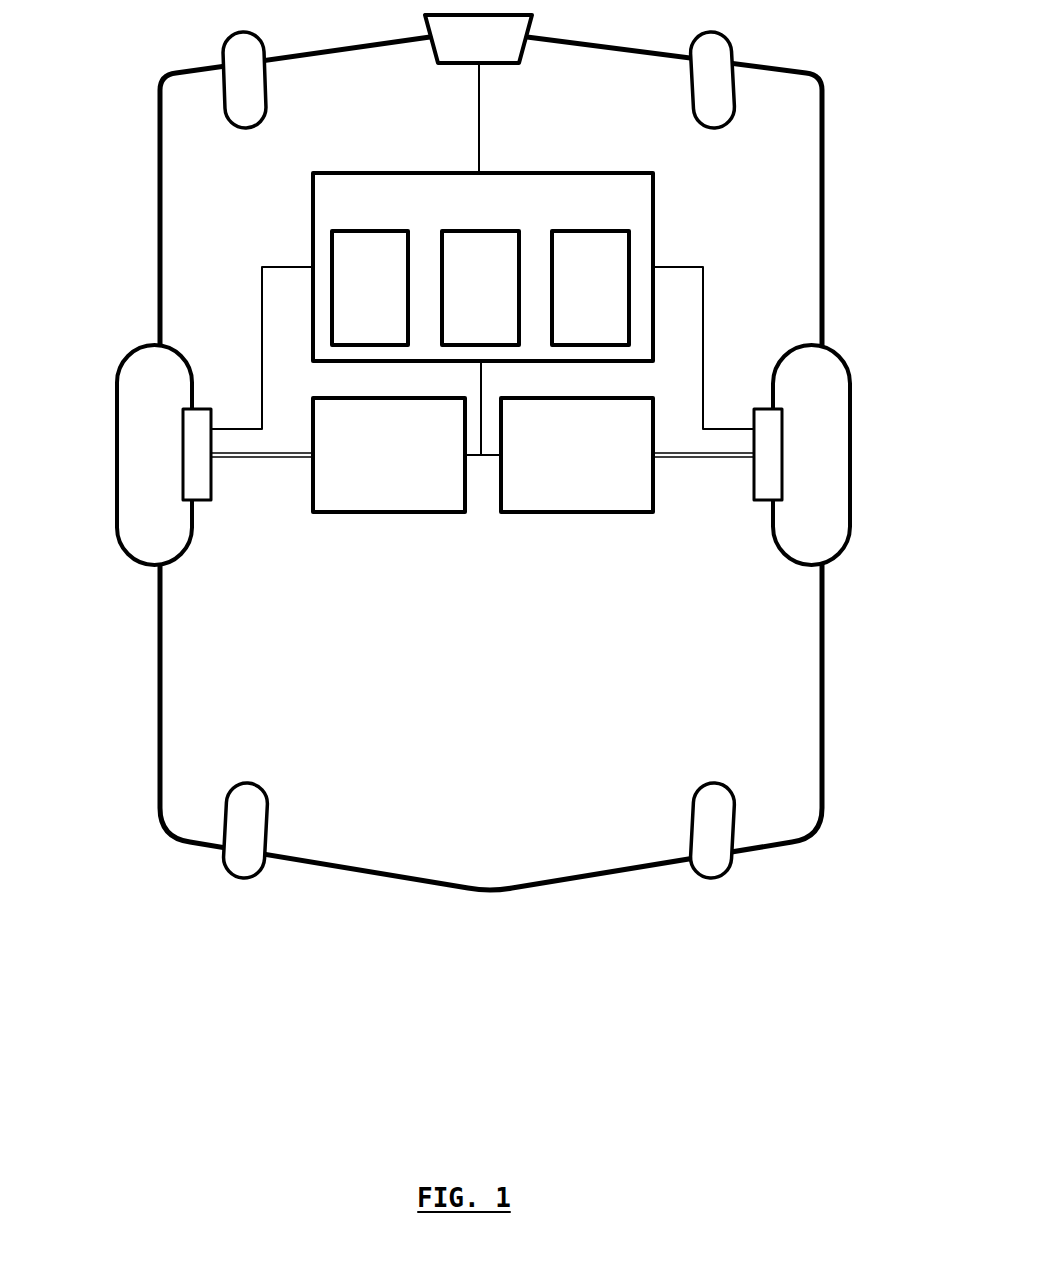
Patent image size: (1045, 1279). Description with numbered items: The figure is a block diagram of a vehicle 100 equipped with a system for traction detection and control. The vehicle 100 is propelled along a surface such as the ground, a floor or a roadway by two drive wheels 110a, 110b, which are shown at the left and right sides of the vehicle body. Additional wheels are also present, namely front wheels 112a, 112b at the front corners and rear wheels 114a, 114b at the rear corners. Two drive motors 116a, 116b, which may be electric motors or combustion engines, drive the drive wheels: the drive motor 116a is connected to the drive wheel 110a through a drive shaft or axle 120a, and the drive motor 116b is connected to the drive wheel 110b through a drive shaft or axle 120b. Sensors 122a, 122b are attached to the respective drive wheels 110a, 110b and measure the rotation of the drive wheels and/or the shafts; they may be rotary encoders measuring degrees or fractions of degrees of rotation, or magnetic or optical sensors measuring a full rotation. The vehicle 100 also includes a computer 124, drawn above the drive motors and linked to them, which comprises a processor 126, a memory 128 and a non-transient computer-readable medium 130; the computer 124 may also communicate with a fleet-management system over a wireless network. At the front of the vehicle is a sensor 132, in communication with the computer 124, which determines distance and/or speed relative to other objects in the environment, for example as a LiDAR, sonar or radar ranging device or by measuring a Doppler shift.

The vehicle 100 is at (467, 768).
The drive wheel 110a is at (115, 455).
The drive wheel 110b is at (853, 455).
The front wheel 112a is at (222, 52).
The front wheel 112b is at (733, 52).
The rear wheel 114a is at (222, 848).
The rear wheel 114b is at (736, 850).
The drive motor 116a is at (359, 467).
The drive motor 116b is at (547, 467).
The drive shaft or axle 120a is at (238, 457).
The drive shaft or axle 120b is at (725, 457).
The sensor 122a is at (197, 500).
The sensor 122b is at (768, 500).
The computer 124 is at (456, 214).
The processor 126 is at (347, 294).
The memory 128 is at (457, 294).
The non-transient computer-readable medium 130 is at (568, 294).
The sensor 132 is at (456, 50).